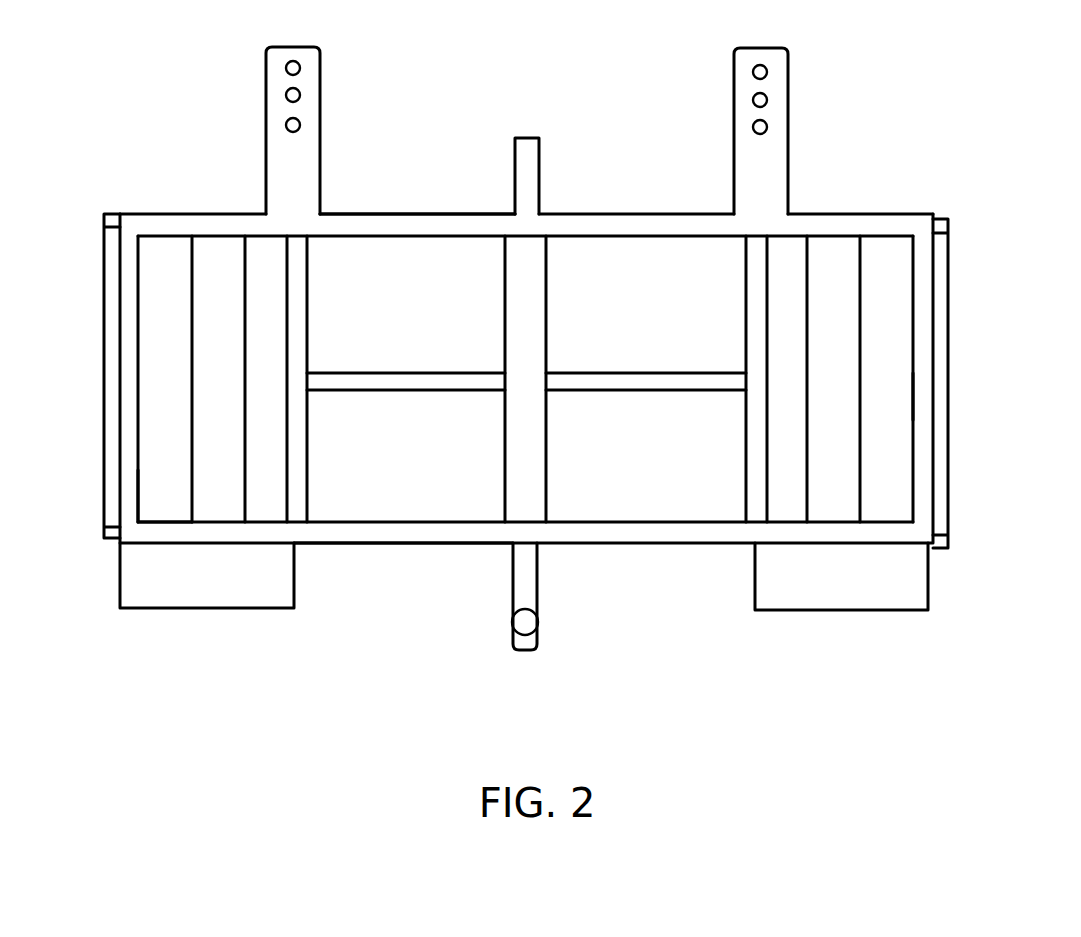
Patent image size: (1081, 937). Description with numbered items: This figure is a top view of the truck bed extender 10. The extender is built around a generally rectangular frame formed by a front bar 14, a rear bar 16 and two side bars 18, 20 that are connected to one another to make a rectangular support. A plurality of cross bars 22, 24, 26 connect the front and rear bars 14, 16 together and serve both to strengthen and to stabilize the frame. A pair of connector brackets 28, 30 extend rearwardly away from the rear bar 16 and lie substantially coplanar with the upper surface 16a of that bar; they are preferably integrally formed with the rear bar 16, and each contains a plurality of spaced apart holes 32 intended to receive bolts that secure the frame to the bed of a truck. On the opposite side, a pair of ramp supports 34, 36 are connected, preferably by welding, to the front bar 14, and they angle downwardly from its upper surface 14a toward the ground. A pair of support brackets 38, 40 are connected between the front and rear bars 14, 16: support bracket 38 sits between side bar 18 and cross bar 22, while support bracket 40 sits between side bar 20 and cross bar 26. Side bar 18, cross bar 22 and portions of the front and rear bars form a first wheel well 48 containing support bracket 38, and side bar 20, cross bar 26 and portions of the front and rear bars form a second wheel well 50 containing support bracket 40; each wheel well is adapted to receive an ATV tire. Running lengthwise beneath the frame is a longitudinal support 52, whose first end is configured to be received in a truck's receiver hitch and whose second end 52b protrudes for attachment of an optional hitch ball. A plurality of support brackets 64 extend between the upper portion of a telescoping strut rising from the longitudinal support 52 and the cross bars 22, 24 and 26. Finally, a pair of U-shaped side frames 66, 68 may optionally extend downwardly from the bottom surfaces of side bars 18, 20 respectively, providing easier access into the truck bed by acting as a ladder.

The truck bed extender 10 is at (978, 139).
The front bar 14 is at (640, 533).
The upper surface of front bar 14a is at (390, 536).
The rear bar 16 is at (692, 232).
The upper surface of rear bar 16a is at (406, 229).
The side bar 18 is at (130, 300).
The side bar 20 is at (925, 332).
The cross bar 22 is at (298, 297).
The cross bar 24 is at (525, 304).
The cross bar 26 is at (755, 302).
The connector bracket 28 is at (290, 164).
The connector bracket 30 is at (775, 166).
The holes 32 is at (301, 127).
The ramp support 34 is at (205, 582).
The ramp support 36 is at (872, 598).
The support bracket 38 is at (225, 394).
The support bracket 40 is at (843, 447).
The first wheel well 48 is at (146, 454).
The second wheel well 50 is at (904, 394).
The longitudinal support 52 is at (529, 170).
The second end of longitudinal support 52b is at (525, 574).
The support brackets 64 is at (392, 392).
The side frame 66 is at (112, 433).
The side frame 68 is at (942, 490).